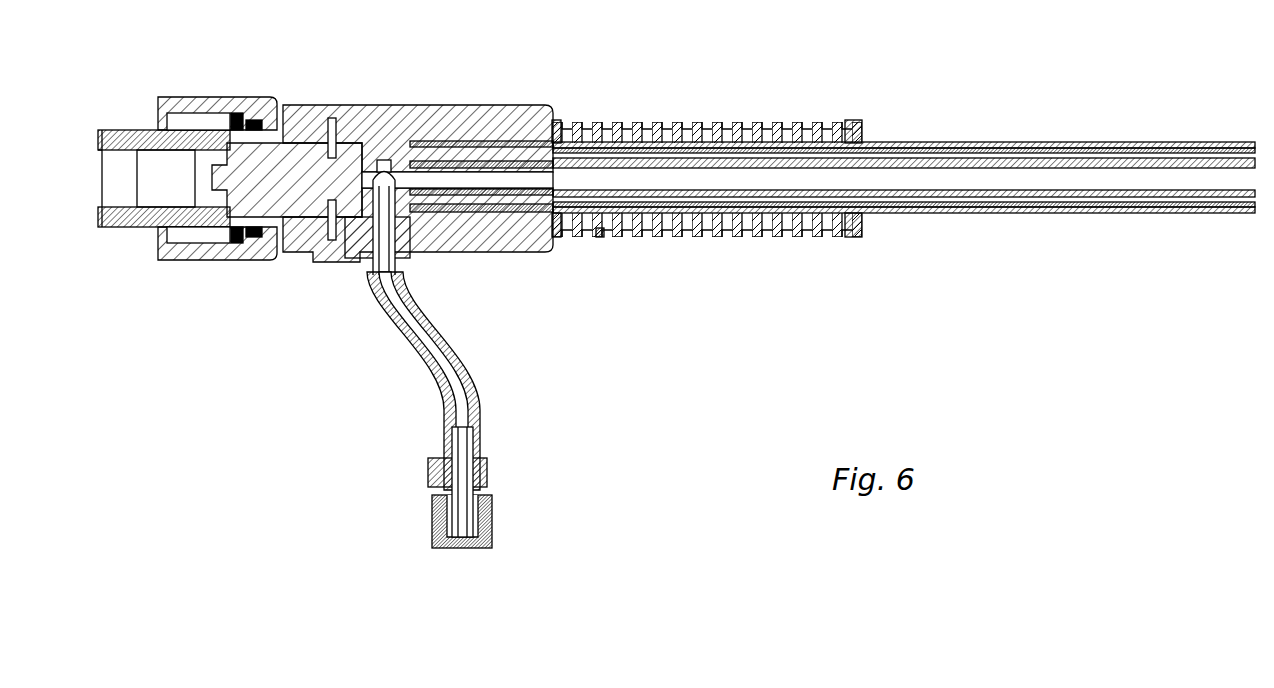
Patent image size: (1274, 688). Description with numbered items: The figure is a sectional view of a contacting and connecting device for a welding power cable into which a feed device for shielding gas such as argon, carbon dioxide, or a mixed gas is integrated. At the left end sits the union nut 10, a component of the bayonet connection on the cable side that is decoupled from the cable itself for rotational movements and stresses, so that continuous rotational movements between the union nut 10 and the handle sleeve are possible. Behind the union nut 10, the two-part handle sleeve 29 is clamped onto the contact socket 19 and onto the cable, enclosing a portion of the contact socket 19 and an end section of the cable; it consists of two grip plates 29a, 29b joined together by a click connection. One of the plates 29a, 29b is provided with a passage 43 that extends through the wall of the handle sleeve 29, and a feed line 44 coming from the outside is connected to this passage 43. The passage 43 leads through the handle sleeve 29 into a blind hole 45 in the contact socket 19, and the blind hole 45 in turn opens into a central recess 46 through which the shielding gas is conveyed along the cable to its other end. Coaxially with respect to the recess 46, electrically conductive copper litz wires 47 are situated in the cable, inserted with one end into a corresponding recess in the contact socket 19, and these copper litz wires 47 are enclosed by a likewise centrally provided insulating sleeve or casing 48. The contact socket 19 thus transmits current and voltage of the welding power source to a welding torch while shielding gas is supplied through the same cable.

The union nut 10 is at (210, 271).
The contact socket 19 is at (380, 163).
The handle sleeve 29 is at (438, 169).
The grip plate 29a is at (527, 248).
The grip plate 29b is at (482, 120).
The passage 43 is at (417, 262).
The feed line 44 is at (489, 384).
The blind hole 45 is at (600, 237).
The central recess 46 is at (745, 178).
The copper litz wires 47 is at (908, 213).
The insulating sleeve or casing 48 is at (1012, 213).